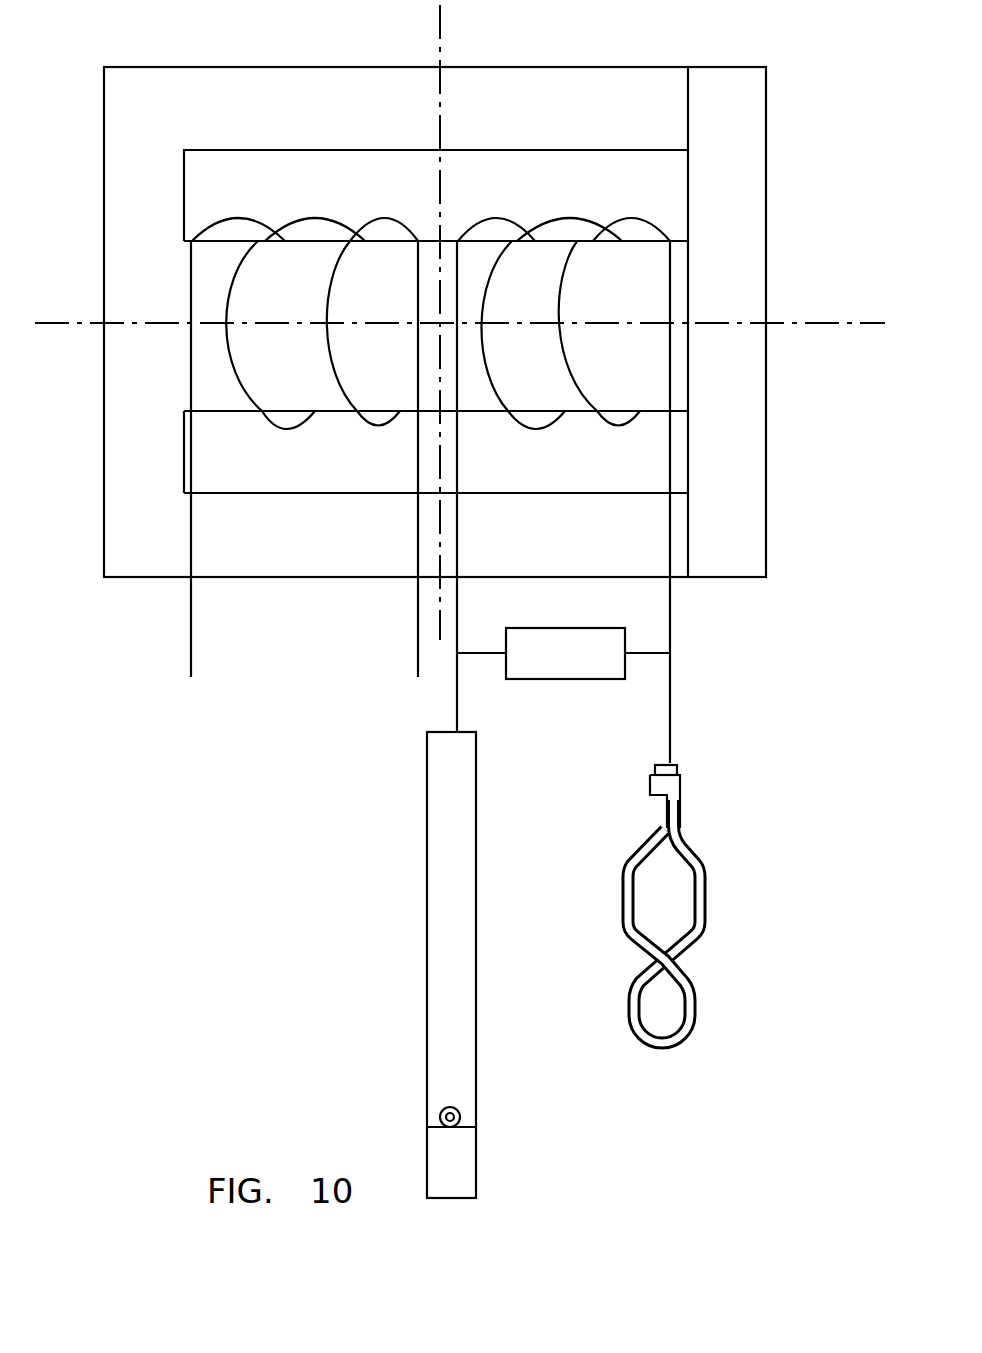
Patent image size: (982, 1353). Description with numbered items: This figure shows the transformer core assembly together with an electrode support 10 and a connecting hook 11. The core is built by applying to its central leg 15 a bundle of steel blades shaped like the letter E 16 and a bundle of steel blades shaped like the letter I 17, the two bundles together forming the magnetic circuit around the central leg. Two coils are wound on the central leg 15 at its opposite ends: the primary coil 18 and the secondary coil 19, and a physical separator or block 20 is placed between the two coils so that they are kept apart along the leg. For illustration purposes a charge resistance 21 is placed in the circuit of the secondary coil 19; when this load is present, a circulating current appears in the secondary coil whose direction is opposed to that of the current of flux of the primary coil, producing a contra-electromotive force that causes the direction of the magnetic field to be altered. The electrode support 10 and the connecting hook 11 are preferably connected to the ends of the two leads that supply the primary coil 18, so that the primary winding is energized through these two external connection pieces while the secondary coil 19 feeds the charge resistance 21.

The electrode support 10 is at (452, 908).
The connecting hook 11 is at (705, 905).
The central leg 15 is at (386, 370).
The bundle of steel blades in the shape of the letter E 16 is at (280, 525).
The bundle of steel blades in the shape of the letter I 17 is at (737, 522).
The primary coil 18 is at (319, 198).
The secondary coil 19 is at (580, 204).
The physical separator or block 20 is at (451, 215).
The charge resistance 21 is at (557, 660).